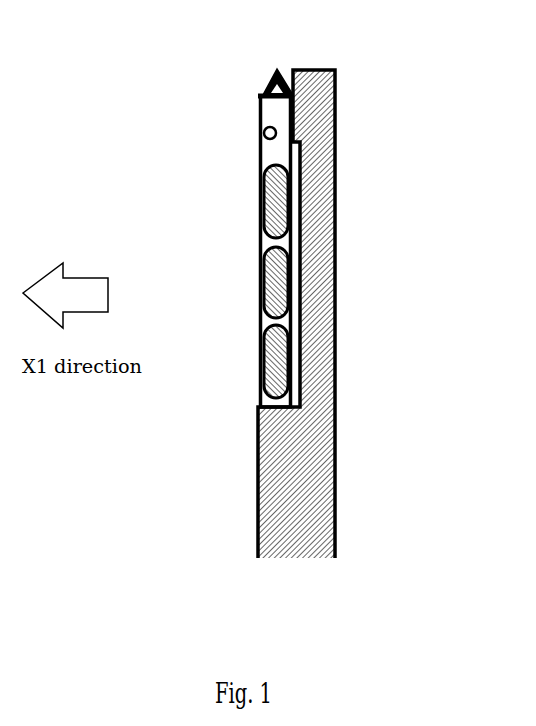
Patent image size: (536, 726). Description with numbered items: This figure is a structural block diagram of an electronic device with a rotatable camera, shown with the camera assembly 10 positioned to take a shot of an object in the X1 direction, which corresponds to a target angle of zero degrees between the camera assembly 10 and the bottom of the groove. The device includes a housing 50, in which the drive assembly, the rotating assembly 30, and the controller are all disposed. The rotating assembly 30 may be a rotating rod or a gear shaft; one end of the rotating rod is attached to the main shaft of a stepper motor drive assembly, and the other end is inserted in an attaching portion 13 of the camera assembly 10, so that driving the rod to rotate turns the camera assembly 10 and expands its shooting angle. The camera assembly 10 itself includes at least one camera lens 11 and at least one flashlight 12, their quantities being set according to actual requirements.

The camera assembly 10 is at (260, 328).
The camera lens 11 is at (260, 218).
The flashlight 12 is at (262, 153).
The attaching portion 13 is at (279, 72).
The rotating assembly 30 is at (268, 80).
The housing 50 is at (335, 140).